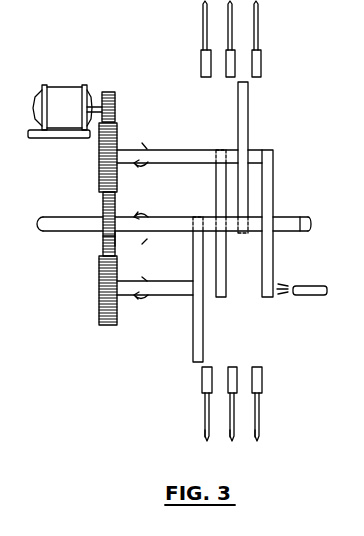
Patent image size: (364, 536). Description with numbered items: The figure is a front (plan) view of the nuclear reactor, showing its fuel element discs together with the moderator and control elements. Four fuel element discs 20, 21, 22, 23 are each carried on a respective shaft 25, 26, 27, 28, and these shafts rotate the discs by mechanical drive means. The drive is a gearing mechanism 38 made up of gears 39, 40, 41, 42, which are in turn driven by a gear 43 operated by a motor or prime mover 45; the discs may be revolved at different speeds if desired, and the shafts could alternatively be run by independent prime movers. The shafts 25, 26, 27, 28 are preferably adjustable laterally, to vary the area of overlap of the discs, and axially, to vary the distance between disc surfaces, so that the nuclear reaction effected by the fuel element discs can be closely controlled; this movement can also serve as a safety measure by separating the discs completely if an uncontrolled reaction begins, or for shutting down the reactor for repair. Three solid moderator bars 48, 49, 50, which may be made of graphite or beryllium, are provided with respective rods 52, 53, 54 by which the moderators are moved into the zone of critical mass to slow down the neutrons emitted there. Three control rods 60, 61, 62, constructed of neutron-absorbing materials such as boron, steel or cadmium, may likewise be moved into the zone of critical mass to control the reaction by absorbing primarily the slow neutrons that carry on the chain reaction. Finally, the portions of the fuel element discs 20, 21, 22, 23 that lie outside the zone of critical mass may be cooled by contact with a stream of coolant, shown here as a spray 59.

The fuel element disc 20 is at (273, 166).
The fuel element disc 21 is at (249, 126).
The fuel element disc 22 is at (216, 190).
The fuel element disc 23 is at (194, 270).
The shaft 25 is at (282, 217).
The shaft 26 is at (200, 150).
The shaft 27 is at (296, 233).
The shaft 28 is at (185, 295).
The gearing mechanism 38 is at (103, 208).
The gear 39 is at (103, 248).
The gear 40 is at (99, 163).
The gear 41 is at (116, 240).
The gear 42 is at (100, 312).
The gear 43 is at (115, 97).
The motor or prime mover 45 is at (62, 85).
The solid moderator bar 48 is at (262, 385).
The solid moderator bar 49 is at (228, 367).
The solid moderator bar 50 is at (202, 383).
The rod 52 is at (257, 440).
The rod 53 is at (232, 440).
The rod 54 is at (207, 440).
The spray 59 is at (307, 295).
The control rod 60 is at (261, 58).
The control rod 61 is at (226, 73).
The control rod 62 is at (201, 64).